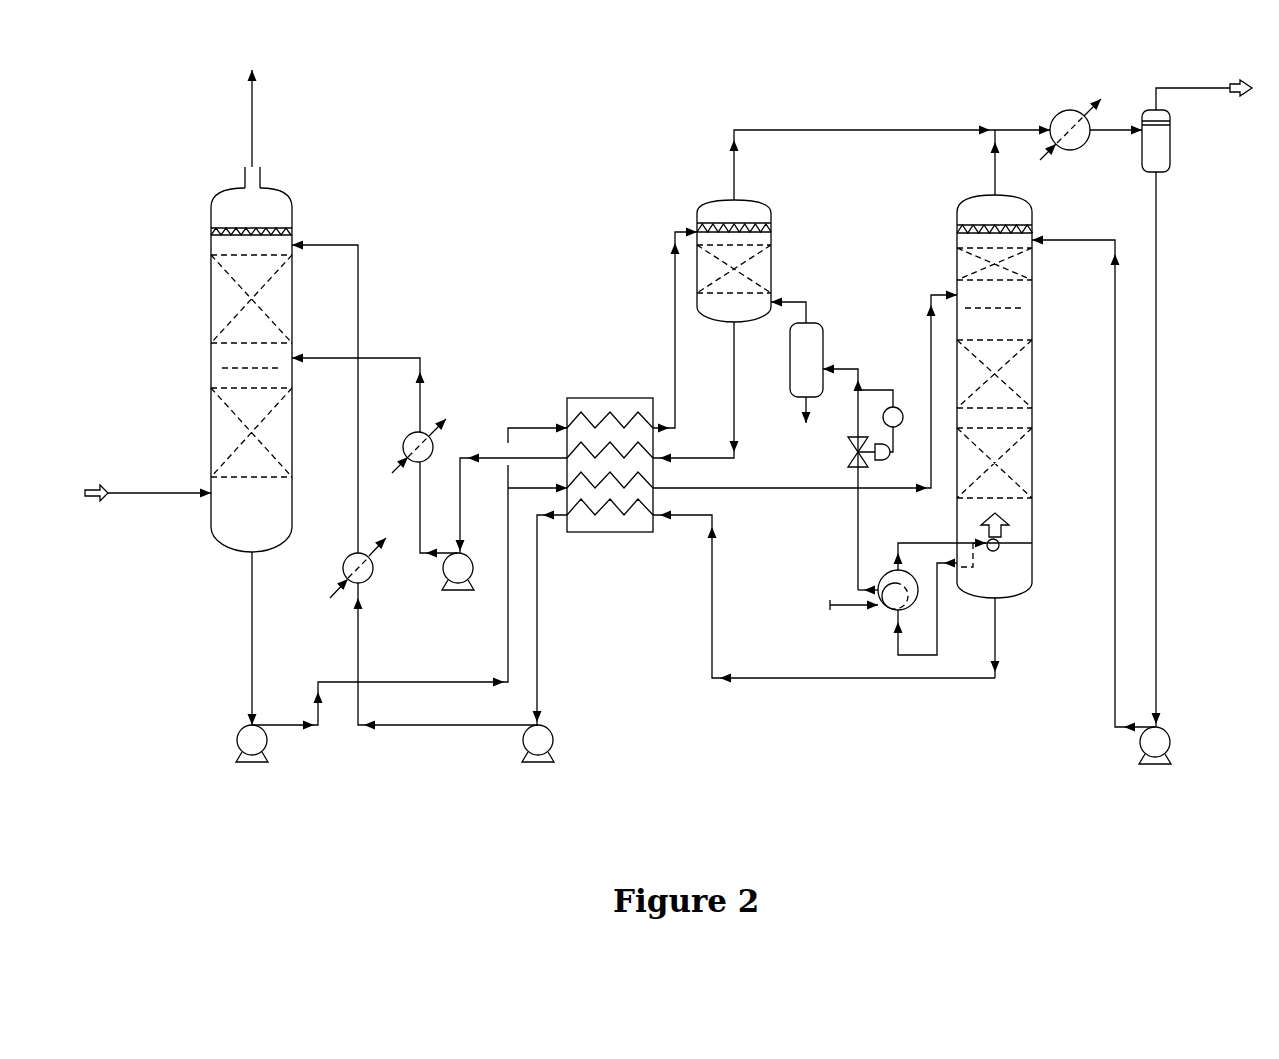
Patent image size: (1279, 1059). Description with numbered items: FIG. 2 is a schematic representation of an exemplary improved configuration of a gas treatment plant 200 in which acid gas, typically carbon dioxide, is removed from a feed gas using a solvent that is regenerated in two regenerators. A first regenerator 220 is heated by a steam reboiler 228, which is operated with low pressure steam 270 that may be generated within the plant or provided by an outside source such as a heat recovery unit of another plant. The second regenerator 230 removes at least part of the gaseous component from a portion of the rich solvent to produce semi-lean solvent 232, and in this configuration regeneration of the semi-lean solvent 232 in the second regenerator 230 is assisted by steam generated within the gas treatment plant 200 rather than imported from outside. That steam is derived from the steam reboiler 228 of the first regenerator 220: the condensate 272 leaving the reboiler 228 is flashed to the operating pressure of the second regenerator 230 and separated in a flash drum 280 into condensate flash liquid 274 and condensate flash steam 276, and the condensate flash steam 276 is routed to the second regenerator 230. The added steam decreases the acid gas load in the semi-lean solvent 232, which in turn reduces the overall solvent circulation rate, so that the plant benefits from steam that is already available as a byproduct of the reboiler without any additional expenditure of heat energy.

The gas treatment plant 200 is at (558, 116).
The first regenerator 220 is at (1032, 525).
The steam reboiler 228 is at (935, 650).
The second regenerator 230 is at (708, 203).
The semi-lean solvent 232 is at (733, 377).
The low pressure steam 270 is at (857, 606).
The condensate 272 is at (825, 368).
The condensate flash liquid 274 is at (802, 412).
The condensate flash steam 276 is at (780, 318).
The flash drum 280 is at (790, 357).